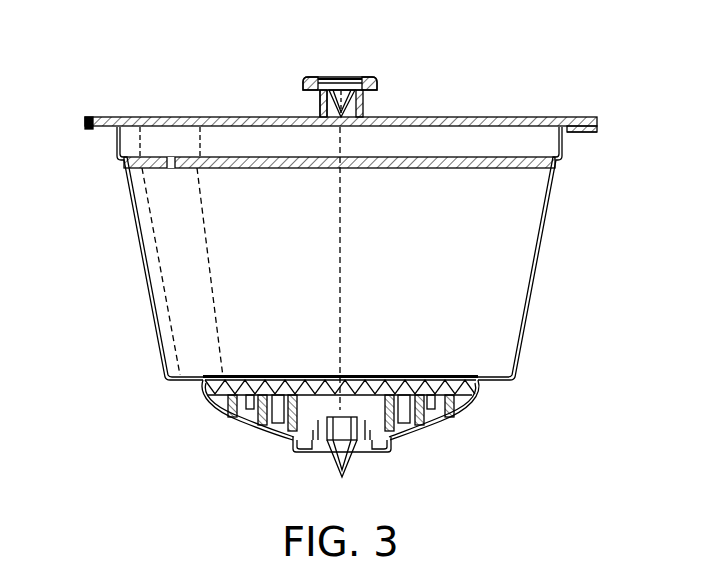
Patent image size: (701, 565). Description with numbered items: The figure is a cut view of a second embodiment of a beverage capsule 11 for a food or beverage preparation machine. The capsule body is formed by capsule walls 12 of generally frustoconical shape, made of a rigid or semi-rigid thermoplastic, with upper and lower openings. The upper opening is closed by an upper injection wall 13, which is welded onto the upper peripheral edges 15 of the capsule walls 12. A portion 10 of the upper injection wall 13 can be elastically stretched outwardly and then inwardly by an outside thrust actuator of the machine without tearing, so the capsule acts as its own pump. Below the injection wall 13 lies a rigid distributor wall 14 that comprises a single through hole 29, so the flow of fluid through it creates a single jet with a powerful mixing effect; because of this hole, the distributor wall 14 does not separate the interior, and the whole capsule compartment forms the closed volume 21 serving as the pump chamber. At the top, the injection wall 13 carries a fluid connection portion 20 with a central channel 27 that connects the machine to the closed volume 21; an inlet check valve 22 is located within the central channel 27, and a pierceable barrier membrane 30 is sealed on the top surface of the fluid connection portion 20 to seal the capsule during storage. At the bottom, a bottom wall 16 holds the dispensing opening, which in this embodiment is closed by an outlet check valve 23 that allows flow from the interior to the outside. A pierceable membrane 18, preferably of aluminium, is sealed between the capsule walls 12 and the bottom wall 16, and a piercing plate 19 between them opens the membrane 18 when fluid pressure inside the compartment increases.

The portion of the capsule upper injection wall 10 is at (462, 117).
The beverage capsule 11 is at (101, 235).
The capsule walls 12 is at (140, 279).
The upper injection wall 13 is at (580, 117).
The rigid distributor wall 14 is at (475, 169).
The upper peripheral edges 15 is at (584, 133).
The bottom wall 16 is at (243, 413).
The pierceable membrane 18 is at (478, 371).
The piercing plate 19 is at (402, 418).
The fluid connection portion 20 is at (300, 74).
The closed volume 21 is at (273, 150).
The inlet check valve 22 is at (320, 110).
The outlet check valve 23 is at (351, 463).
The central channel 27 is at (333, 119).
The through hole 29 is at (169, 172).
The pierceable barrier membrane 30 is at (343, 72).